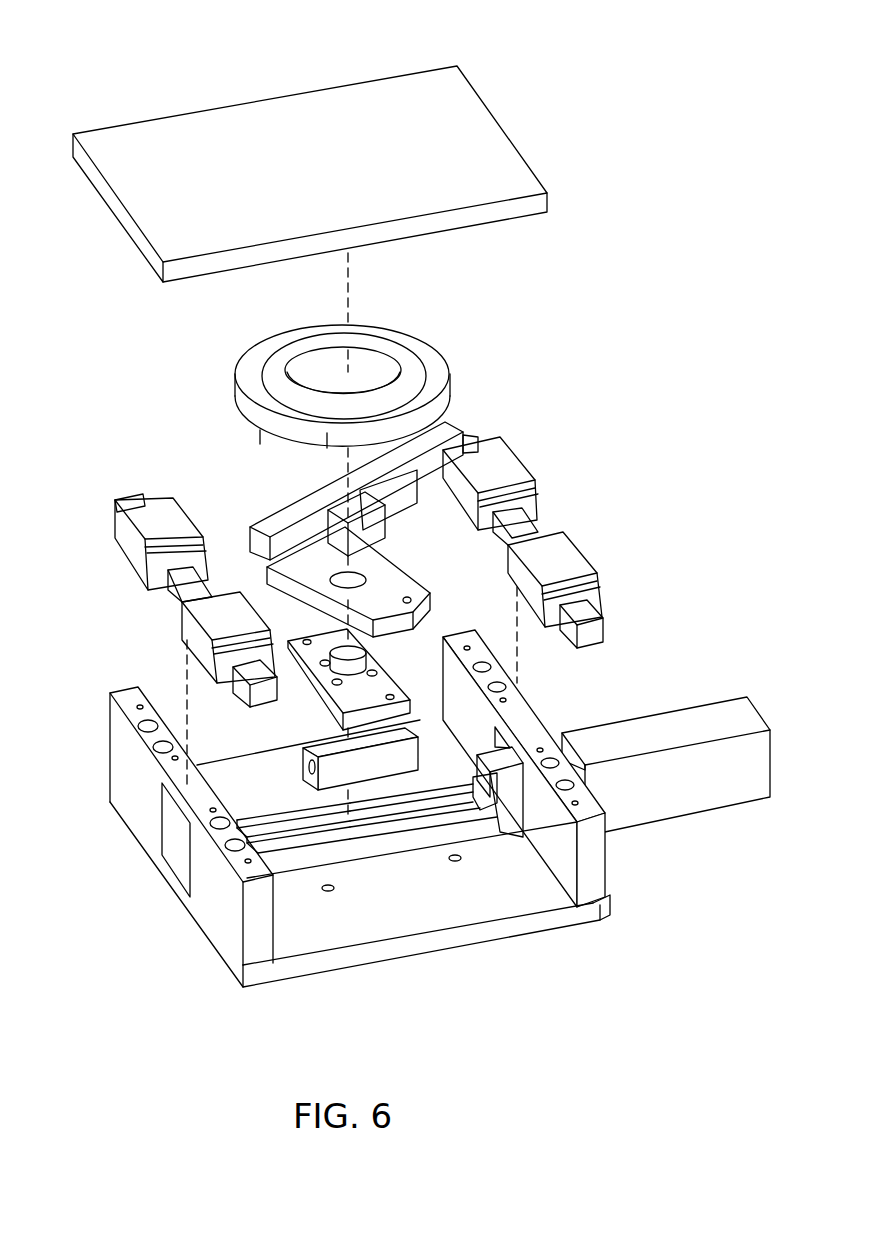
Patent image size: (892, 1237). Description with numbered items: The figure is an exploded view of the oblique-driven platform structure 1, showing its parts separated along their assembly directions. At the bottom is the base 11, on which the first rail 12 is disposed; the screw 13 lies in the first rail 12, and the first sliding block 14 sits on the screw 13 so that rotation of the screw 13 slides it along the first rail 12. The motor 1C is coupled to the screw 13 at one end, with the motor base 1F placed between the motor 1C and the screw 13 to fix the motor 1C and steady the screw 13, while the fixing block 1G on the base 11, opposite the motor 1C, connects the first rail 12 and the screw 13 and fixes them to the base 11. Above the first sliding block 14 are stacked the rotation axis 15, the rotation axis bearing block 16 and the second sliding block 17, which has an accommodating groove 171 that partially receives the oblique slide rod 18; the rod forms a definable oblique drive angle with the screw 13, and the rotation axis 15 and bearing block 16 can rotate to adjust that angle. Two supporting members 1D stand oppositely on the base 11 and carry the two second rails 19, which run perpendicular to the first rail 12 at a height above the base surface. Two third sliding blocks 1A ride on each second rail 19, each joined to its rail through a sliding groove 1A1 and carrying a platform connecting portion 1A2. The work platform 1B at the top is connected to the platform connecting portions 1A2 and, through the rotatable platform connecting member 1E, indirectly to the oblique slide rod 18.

The oblique-driven platform structure 1 is at (38, 30).
The work platform 1B is at (488, 150).
The platform connecting member 1E is at (430, 343).
The oblique slide rod 18 is at (445, 432).
The second sliding block 17 is at (443, 475).
The accommodating groove 171 is at (308, 492).
The platform connecting portion 1A2 is at (137, 508).
The sliding groove 1A1 is at (170, 563).
The rotation axis bearing block 16 is at (378, 595).
The third sliding block 1A is at (597, 595).
The second rail 19 is at (592, 637).
The motor 1C is at (675, 730).
The supporting member 1D is at (115, 732).
The motor base 1F is at (502, 780).
The rotation axis 15 is at (310, 682).
The fixing block 1G is at (237, 820).
The screw 13 is at (460, 802).
The first sliding block 14 is at (303, 760).
The first rail 12 is at (470, 837).
The base 11 is at (457, 947).